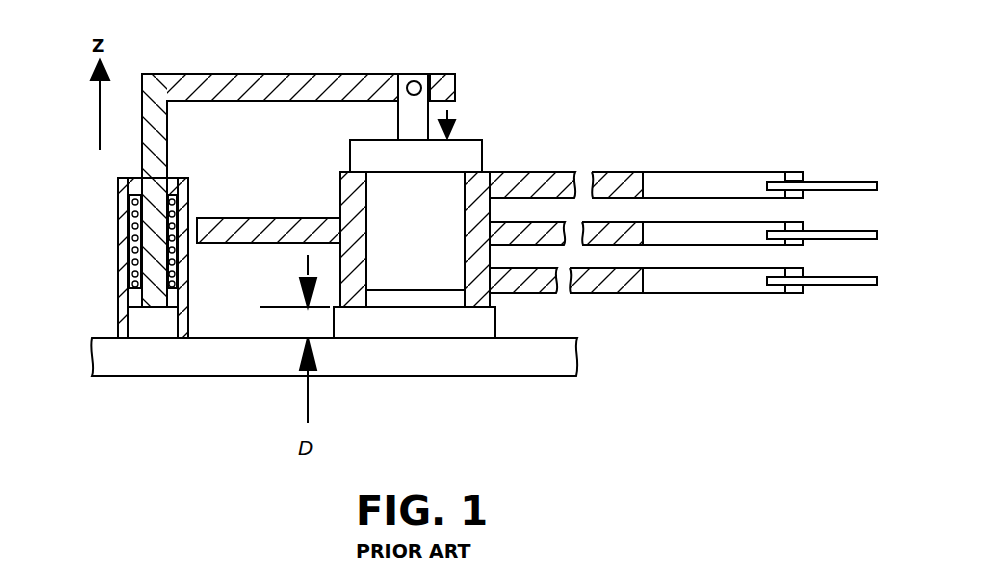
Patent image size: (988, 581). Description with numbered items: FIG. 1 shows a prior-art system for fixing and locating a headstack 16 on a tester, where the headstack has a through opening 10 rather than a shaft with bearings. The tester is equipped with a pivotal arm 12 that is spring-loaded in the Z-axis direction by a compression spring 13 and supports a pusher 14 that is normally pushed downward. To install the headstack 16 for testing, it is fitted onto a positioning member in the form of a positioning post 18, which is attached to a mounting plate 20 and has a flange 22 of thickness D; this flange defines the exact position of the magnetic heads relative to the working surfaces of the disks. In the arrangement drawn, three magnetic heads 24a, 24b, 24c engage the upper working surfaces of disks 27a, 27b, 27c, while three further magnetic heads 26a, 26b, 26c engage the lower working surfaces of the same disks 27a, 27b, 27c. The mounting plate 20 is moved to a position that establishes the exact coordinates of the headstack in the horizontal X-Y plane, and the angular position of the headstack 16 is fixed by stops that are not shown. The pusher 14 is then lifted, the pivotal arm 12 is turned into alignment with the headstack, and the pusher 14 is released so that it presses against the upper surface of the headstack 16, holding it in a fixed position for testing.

The through opening 10 is at (366, 203).
The pivotal arm 12 is at (231, 66).
The compression spring 13 is at (130, 215).
The pusher 14 is at (465, 150).
The headstack 16 is at (545, 140).
The positioning post 18 is at (390, 298).
The mounting plate 20 is at (470, 367).
The flange 22 is at (428, 338).
The magnetic head 24a is at (796, 172).
The magnetic head 24b is at (796, 230).
The magnetic head 24c is at (797, 272).
The magnetic head 26a is at (800, 195).
The magnetic head 26b is at (804, 245).
The magnetic head 26c is at (800, 292).
The disk 27a is at (848, 182).
The disk 27b is at (876, 236).
The disk 27c is at (877, 282).